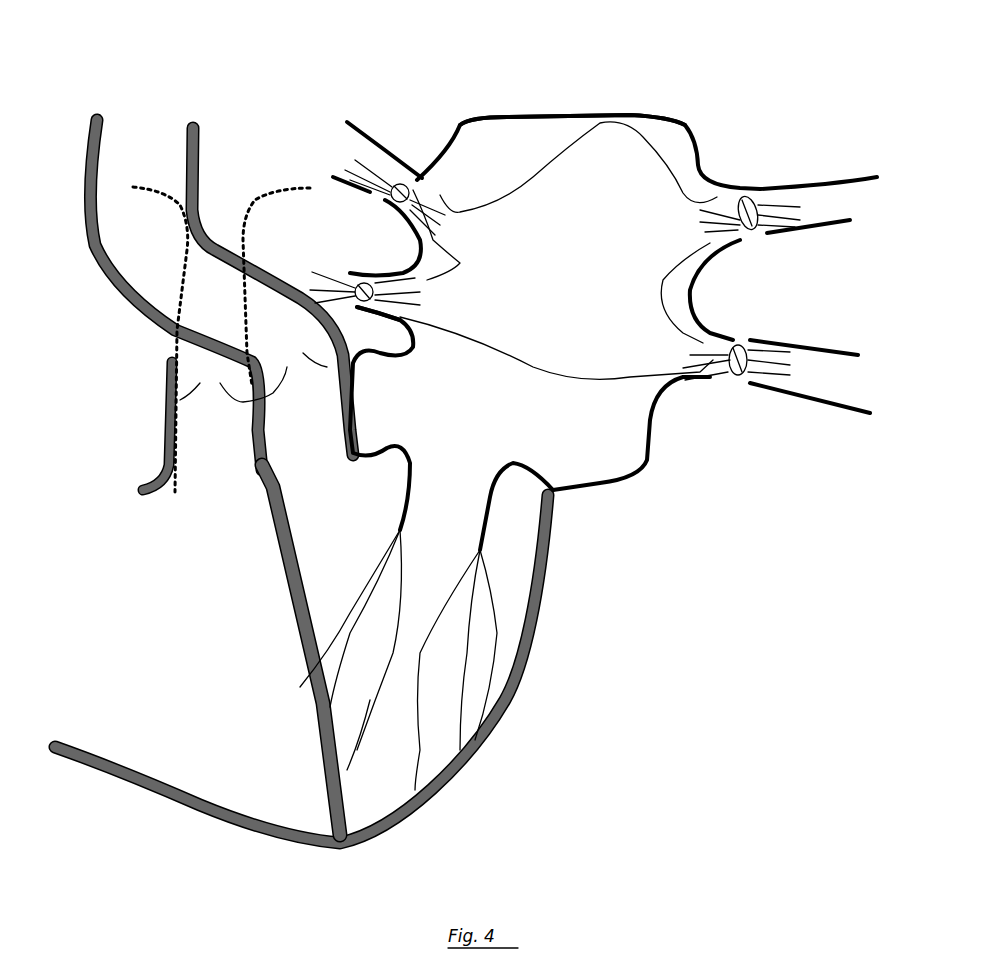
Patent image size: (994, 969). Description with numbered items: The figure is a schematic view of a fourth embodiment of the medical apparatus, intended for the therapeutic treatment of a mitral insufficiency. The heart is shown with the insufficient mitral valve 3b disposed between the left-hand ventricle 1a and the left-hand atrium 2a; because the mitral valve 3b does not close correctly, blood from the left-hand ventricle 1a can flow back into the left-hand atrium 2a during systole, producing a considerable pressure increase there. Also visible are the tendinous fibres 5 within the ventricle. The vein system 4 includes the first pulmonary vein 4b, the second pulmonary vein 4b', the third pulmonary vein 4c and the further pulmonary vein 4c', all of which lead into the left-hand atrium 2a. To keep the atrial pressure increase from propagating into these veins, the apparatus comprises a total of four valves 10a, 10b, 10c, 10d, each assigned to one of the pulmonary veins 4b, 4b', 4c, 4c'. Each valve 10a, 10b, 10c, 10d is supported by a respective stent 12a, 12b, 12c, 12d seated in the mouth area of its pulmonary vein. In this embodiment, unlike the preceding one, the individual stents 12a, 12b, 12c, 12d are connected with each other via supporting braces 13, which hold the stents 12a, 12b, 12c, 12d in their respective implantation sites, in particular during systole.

The left-hand ventricle 1a is at (313, 535).
The left-hand atrium 2a is at (610, 177).
The mitral valve 3b is at (488, 507).
The vein system 4 is at (542, 287).
The second pulmonary vein 4b' is at (389, 92).
The first pulmonary vein 4b is at (848, 269).
The third pulmonary vein 4c is at (822, 448).
The pulmonary vein 4c' is at (277, 435).
The tendinous fibres 5 is at (465, 662).
The valve 10a is at (760, 210).
The valve 10b is at (397, 187).
The valve 10c is at (743, 352).
The valve 10d is at (362, 292).
The stent 12a is at (707, 207).
The stent 12b is at (372, 172).
The stent 12c is at (698, 357).
The stent 12d is at (392, 292).
The supporting brace 13 is at (535, 150).